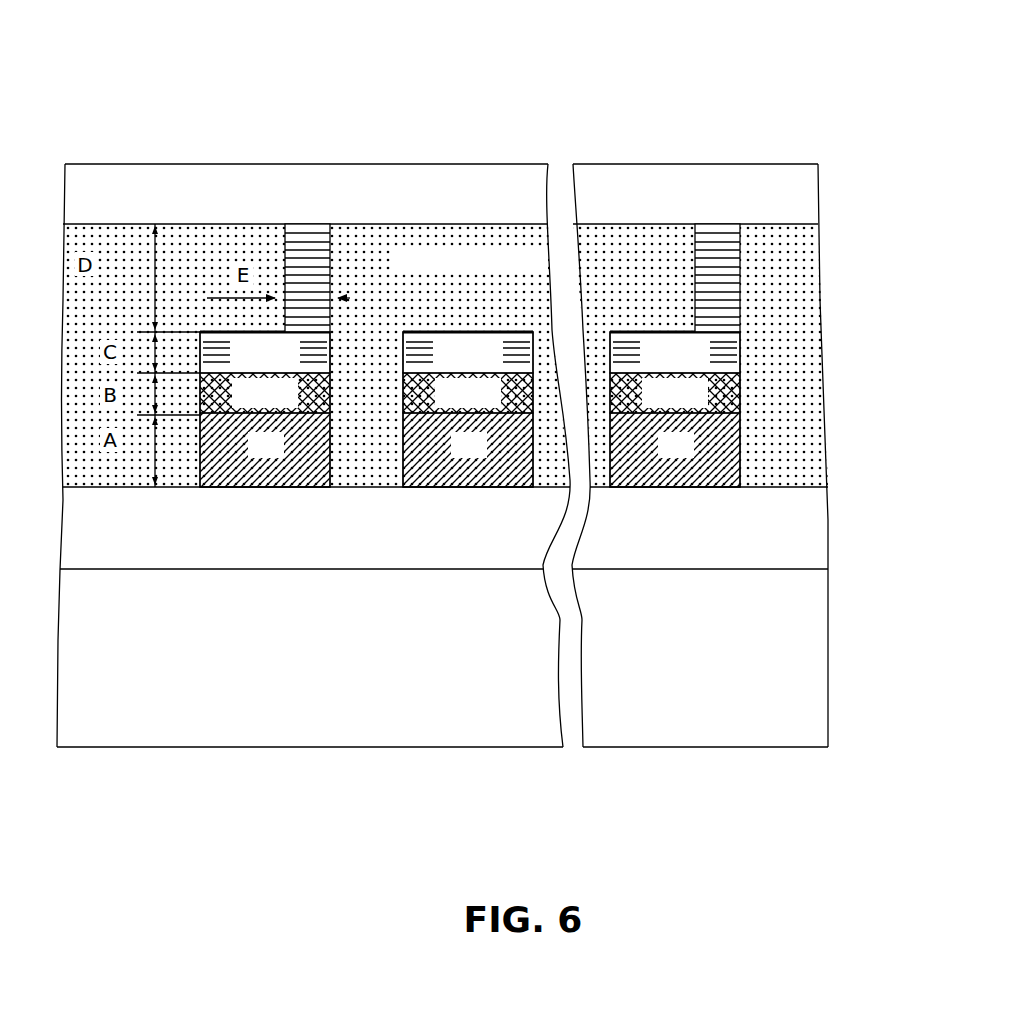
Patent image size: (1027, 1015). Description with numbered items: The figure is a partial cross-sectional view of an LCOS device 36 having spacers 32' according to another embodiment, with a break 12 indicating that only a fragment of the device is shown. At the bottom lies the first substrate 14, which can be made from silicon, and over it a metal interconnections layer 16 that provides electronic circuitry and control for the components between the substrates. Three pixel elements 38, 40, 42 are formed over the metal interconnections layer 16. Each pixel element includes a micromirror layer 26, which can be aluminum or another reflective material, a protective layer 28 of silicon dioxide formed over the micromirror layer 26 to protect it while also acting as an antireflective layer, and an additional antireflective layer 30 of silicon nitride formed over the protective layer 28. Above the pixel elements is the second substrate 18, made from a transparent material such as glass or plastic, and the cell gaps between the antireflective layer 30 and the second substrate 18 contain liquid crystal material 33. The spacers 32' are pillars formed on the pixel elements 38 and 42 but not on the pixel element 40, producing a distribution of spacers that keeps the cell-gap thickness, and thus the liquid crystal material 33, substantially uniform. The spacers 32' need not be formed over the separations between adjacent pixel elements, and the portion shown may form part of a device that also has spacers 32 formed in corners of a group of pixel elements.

The LCOS device 36 is at (390, 88).
The break 12 is at (558, 165).
The second substrate 18 is at (800, 197).
The liquid crystal material 33 is at (500, 237).
The spacers 32 is at (468, 355).
The spacers 32' is at (490, 229).
The antireflective layer 30 is at (740, 345).
The protective layer 28 is at (740, 388).
The micromirror layer 26 is at (740, 433).
The metal interconnections layer 16 is at (808, 533).
The first substrate 14 is at (425, 728).
The pixel element 38 is at (308, 496).
The pixel element 40 is at (500, 496).
The pixel element 42 is at (722, 496).